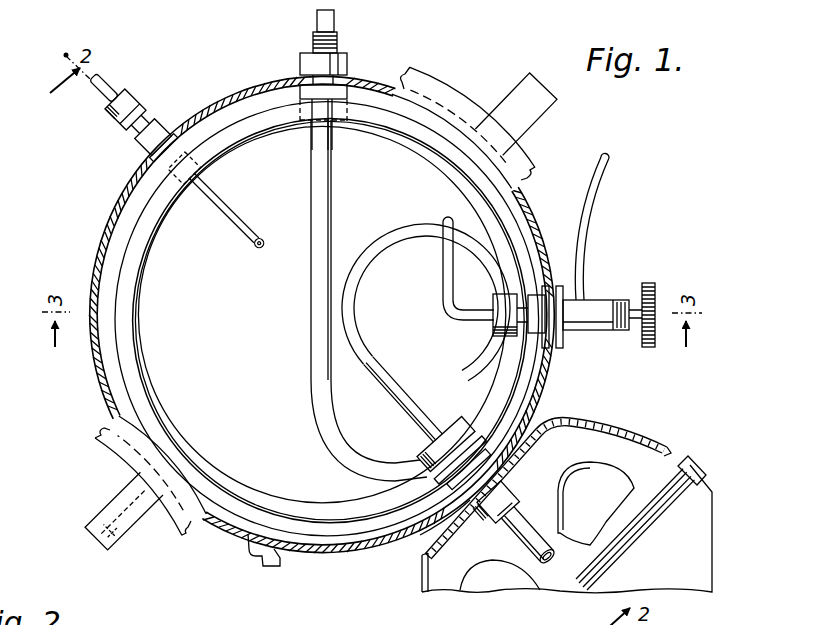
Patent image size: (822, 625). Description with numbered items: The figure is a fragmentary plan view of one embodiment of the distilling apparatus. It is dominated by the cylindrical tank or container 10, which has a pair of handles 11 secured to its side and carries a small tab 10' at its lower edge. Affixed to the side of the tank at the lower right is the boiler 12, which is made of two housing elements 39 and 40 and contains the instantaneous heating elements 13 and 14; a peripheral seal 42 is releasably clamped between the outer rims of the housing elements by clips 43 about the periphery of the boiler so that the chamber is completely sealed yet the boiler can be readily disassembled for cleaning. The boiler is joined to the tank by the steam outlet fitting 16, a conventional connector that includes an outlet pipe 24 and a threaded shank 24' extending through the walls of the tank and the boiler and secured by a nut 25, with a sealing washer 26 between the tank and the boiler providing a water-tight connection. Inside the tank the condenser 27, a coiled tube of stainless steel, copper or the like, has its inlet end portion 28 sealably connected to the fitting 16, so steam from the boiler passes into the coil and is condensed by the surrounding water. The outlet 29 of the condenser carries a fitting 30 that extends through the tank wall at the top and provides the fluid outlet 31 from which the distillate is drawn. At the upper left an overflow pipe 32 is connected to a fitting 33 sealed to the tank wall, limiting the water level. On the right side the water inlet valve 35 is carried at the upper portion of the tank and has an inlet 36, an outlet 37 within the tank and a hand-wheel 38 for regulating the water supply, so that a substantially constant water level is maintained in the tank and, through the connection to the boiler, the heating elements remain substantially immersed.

The cylindrical tank or container 10 is at (306, 314).
The drum tab 10' is at (269, 566).
The handles 11 is at (542, 123).
The boiler 12 is at (626, 426).
The heating element 13 is at (482, 576).
The heating element 14 is at (604, 515).
The steam outlet fitting 16 is at (470, 533).
The outlet pipe 24 is at (528, 526).
The threaded shank 24' is at (491, 535).
The nut 25 is at (522, 468).
The sealing washer 26 is at (440, 536).
The condenser 27 is at (312, 346).
The inlet end portion 28 is at (428, 410).
The outlet 29 is at (327, 137).
The fitting 30 is at (300, 88).
The fluid outlet 31 is at (316, 21).
The overflow pipe 32 is at (254, 240).
The fitting 33 is at (167, 219).
The water inlet valve 35 is at (604, 300).
The inlet 36 is at (606, 183).
The outlet 37 is at (443, 286).
The hand-wheel 38 is at (653, 285).
The housing element 39 is at (668, 450).
The housing element 40 is at (686, 581).
The peripheral seal 42 is at (660, 510).
The clips 43 is at (700, 463).